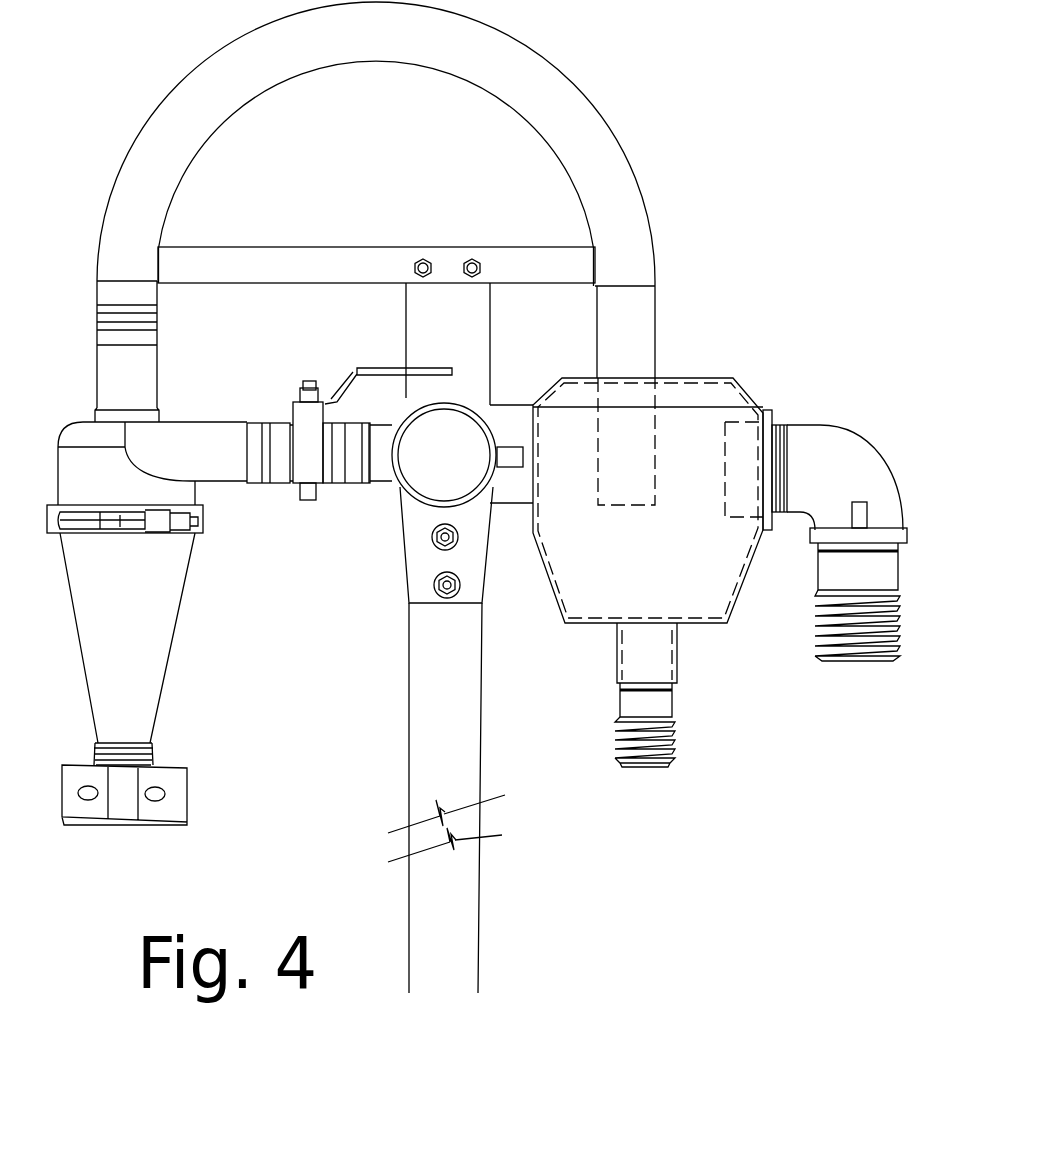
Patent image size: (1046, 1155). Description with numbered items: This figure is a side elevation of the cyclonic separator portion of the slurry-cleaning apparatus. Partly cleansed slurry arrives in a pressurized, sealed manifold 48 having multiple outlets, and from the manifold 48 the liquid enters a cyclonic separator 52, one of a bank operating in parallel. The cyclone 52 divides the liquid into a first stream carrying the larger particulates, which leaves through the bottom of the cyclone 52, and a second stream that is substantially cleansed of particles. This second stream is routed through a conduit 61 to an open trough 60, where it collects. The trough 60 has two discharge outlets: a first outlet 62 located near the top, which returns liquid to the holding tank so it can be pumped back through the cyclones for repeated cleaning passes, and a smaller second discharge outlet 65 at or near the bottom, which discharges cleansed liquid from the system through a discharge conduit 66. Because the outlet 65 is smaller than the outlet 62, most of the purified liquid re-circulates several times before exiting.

The conduit 61 is at (568, 90).
The open trough 60 is at (690, 428).
The first outlet 62 is at (747, 435).
The manifold 48 is at (453, 483).
The cyclonic separator 52 is at (143, 635).
The second discharge outlet 65 is at (658, 665).
The discharge conduit 66 is at (642, 775).